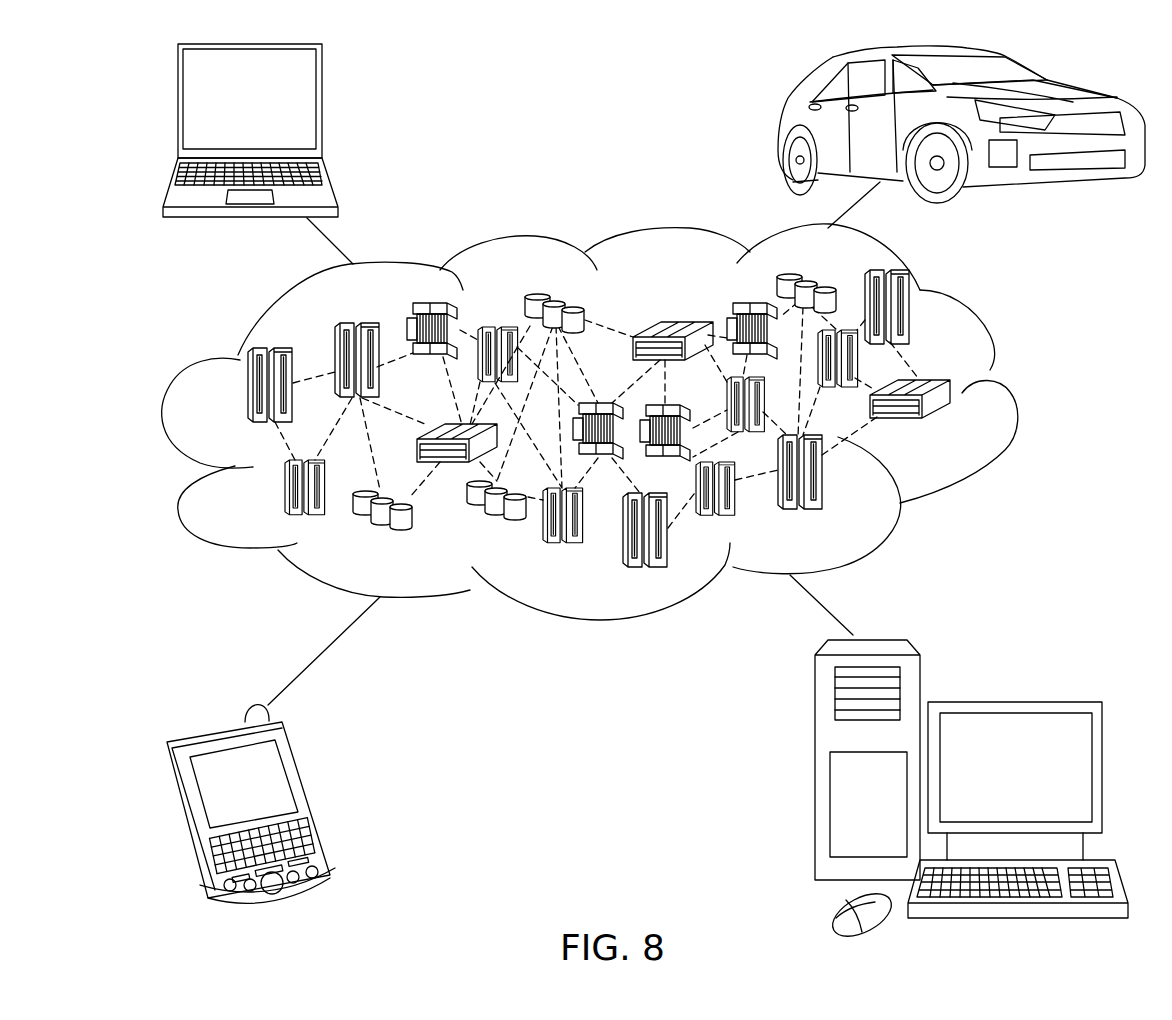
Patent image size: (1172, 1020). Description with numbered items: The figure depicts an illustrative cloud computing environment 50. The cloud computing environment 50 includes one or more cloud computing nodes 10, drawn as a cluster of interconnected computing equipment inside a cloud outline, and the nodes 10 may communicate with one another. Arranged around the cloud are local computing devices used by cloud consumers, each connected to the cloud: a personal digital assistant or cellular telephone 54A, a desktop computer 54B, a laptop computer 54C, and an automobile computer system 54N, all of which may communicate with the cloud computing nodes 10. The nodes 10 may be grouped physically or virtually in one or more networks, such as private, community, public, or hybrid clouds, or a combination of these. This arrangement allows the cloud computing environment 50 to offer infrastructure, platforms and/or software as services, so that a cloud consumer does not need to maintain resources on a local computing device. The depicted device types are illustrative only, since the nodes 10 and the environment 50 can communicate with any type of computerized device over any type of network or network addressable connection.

The cloud computing environment 50 is at (1013, 395).
The cloud computing nodes 10 is at (966, 431).
The personal digital assistant (PDA) or cellular telephone 54A is at (310, 798).
The desktop computer 54B is at (1012, 702).
The laptop computer 54C is at (322, 108).
The automobile computer system 54N is at (783, 127).